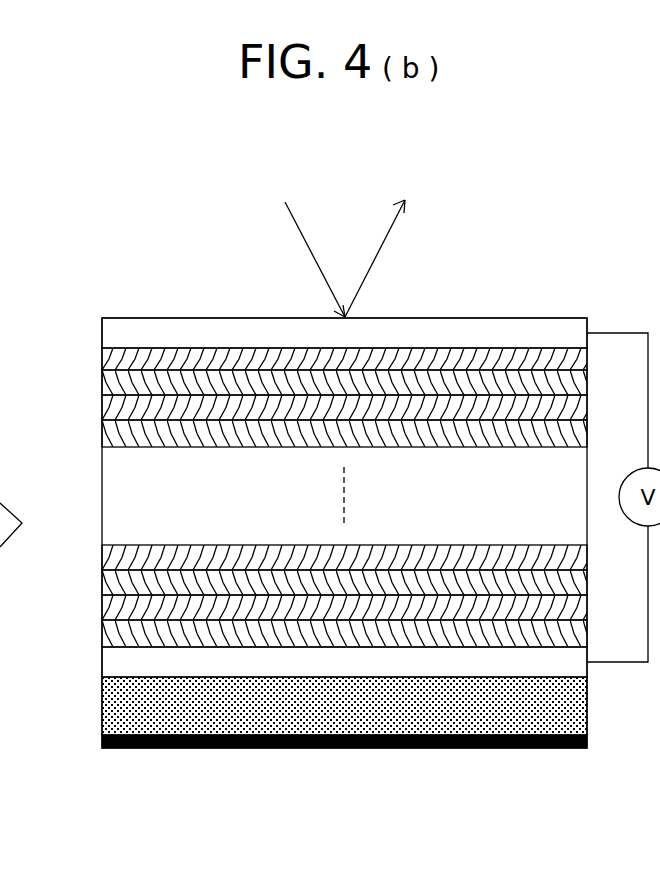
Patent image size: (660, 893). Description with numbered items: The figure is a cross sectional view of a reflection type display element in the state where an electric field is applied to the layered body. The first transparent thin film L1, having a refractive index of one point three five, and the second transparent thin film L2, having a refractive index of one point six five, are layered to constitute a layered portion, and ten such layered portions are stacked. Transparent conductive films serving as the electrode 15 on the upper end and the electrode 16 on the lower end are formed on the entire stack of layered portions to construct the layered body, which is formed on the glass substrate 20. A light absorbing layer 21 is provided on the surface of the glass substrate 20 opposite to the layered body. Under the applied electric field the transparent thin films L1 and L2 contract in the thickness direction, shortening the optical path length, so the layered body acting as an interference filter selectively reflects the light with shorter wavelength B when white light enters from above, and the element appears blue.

The electrode 15 is at (110, 333).
The second transparent thin film L2 is at (107, 360).
The first transparent thin film L1 is at (110, 385).
The electrode 16 is at (106, 663).
The glass substrate 20 is at (104, 711).
The light absorbing layer 21 is at (104, 741).
The light with shorter wavelength B is at (376, 258).